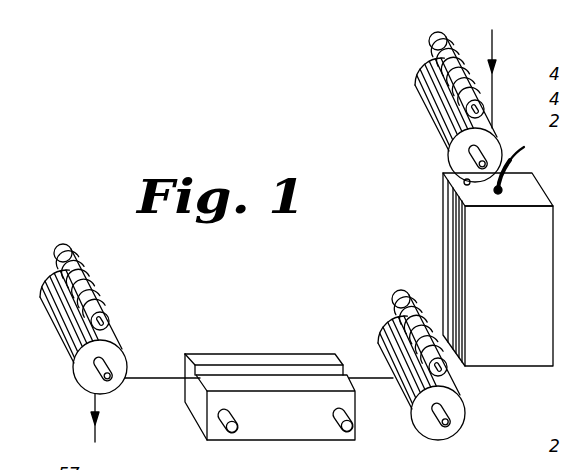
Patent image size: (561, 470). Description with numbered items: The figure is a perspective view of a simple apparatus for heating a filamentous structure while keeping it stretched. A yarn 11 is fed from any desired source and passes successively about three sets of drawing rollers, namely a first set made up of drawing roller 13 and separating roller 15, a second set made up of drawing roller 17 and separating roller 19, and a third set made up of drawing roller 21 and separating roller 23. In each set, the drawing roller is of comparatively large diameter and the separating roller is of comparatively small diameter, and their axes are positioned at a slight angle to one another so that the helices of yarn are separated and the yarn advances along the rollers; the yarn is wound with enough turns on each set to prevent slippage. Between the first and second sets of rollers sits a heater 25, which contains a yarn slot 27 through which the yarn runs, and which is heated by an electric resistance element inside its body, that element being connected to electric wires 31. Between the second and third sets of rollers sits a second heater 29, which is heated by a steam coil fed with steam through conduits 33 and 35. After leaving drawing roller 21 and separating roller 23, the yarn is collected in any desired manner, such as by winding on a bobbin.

The yarn 11 is at (494, 36).
The drawing roller 13 is at (461, 163).
The separating roller 15 is at (431, 40).
The drawing roller 17 is at (385, 338).
The separating roller 19 is at (402, 300).
The drawing roller 21 is at (108, 353).
The separating roller 23 is at (72, 250).
The heater 25 is at (507, 366).
The yarn slot 27 is at (458, 191).
The heater 29 is at (355, 407).
The electric wires 31 is at (503, 150).
The conduit 33 is at (337, 421).
The conduit 35 is at (226, 424).